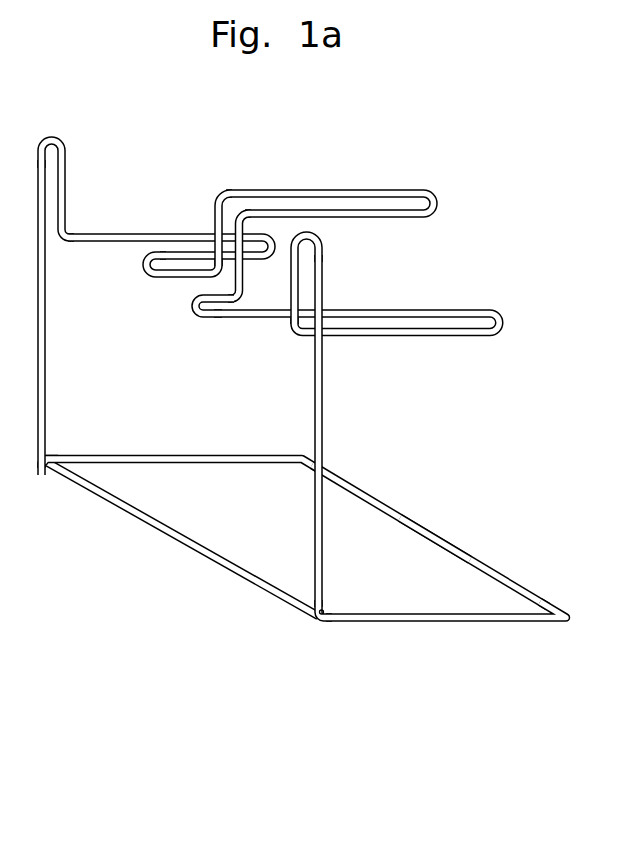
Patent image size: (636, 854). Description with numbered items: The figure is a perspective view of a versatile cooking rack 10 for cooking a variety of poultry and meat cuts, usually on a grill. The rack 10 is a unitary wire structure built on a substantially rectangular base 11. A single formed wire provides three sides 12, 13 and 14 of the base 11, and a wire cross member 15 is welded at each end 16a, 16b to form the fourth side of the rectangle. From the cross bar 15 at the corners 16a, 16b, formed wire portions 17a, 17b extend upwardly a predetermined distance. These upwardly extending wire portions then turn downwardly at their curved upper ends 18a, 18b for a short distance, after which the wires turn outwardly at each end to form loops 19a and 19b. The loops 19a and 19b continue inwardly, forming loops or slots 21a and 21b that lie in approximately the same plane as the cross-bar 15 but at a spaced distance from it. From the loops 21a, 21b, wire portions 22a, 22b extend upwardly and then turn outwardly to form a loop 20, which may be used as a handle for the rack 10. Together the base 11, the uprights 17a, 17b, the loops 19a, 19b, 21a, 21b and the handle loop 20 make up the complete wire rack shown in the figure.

The versatile cooking rack 10 is at (208, 108).
The substantially rectangular base 11 is at (455, 532).
The side of the base 12 is at (173, 455).
The side of the base 13 is at (512, 578).
The side of the base 14 is at (510, 623).
The wire cross member 15 is at (187, 535).
The end of the cross member 16a is at (46, 452).
The end of the cross member 16b is at (322, 612).
The upwardly extending wire portion 17a is at (45, 321).
The upwardly extending wire portion 17b is at (322, 430).
The curved upper end 18a is at (52, 135).
The curved upper end 18b is at (312, 233).
The loop 19a is at (205, 230).
The loop 19b is at (389, 340).
The loop 20 is at (440, 207).
The loop or slot 21a is at (139, 267).
The loop or slot 21b is at (191, 310).
The wire portion 22a is at (233, 240).
The wire portion 22b is at (245, 245).